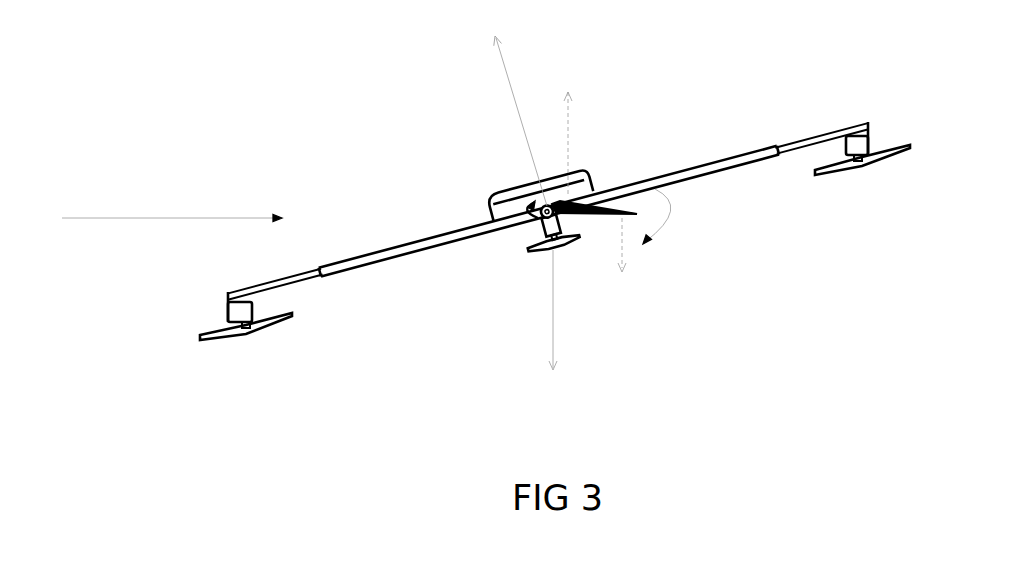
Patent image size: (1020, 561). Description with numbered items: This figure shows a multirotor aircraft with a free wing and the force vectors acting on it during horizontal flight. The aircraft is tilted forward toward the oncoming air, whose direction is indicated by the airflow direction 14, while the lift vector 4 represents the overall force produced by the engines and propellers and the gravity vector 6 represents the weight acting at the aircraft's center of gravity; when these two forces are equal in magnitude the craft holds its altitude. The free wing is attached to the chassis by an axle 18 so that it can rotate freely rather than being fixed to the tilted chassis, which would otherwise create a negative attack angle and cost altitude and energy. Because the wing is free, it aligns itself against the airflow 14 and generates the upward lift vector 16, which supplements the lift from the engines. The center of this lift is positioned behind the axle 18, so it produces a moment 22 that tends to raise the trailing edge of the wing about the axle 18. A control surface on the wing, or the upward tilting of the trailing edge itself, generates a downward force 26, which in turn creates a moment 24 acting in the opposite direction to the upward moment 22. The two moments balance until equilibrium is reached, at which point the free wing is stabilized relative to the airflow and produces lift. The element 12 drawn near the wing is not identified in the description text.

The tilted axis of rotation 4 is at (497, 77).
The downward vertical axis 6 is at (553, 338).
The central rotor assembly 12 is at (572, 217).
The airflow / flight direction arrow 14 is at (177, 205).
The vertical reference axis 16 is at (572, 117).
The cover housing 18 is at (497, 190).
The fin / blade 22 is at (591, 179).
The rotation direction arc 24 is at (675, 213).
The vertical offset reference line 26 is at (631, 253).